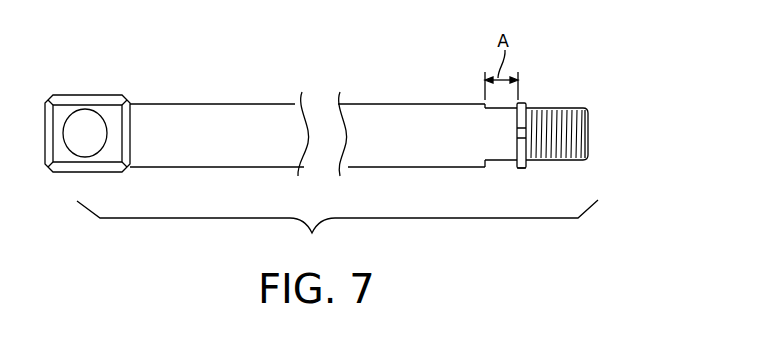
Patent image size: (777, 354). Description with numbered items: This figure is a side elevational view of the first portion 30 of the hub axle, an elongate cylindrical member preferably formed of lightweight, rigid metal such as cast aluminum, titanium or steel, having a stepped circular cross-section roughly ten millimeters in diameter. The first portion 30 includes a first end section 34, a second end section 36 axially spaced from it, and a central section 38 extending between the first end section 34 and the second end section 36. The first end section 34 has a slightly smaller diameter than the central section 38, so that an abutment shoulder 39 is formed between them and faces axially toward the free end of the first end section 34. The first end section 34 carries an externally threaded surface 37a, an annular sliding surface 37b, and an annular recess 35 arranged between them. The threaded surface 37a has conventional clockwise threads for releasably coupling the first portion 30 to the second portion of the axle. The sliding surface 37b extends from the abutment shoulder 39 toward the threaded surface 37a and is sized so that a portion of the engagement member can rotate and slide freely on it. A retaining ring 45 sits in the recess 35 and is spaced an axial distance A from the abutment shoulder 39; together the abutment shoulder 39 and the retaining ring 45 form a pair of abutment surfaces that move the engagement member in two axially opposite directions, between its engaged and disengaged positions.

The first portion 30 is at (558, 66).
The first end section 34 is at (557, 102).
The annular recess 35 is at (530, 170).
The second end section 36 is at (137, 103).
The externally threaded surface 37a is at (573, 162).
The annular sliding surface 37b is at (505, 163).
The central section 38 is at (357, 100).
The abutment shoulder 39 is at (492, 168).
The retaining ring 45 is at (523, 101).